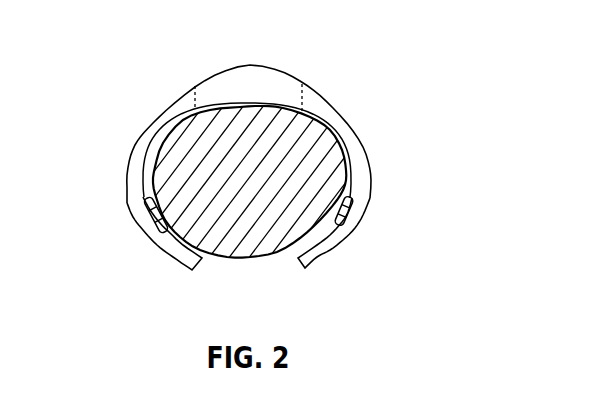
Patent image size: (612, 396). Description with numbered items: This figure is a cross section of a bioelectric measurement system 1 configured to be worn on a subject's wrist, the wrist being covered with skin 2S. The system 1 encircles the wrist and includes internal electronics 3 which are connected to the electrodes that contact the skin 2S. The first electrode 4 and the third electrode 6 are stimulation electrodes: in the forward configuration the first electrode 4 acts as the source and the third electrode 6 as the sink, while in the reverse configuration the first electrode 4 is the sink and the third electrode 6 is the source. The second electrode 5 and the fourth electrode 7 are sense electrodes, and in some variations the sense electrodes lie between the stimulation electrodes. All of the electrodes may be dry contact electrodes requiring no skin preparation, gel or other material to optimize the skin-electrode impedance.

The bioelectric measurement system 1 is at (272, 134).
The internal electronics 3 is at (267, 69).
The first electrode 4 is at (259, 170).
The skin 2S is at (249, 209).
The second electrode 5 is at (341, 246).
The third electrode 6 is at (113, 221).
The fourth electrode 7 is at (154, 243).